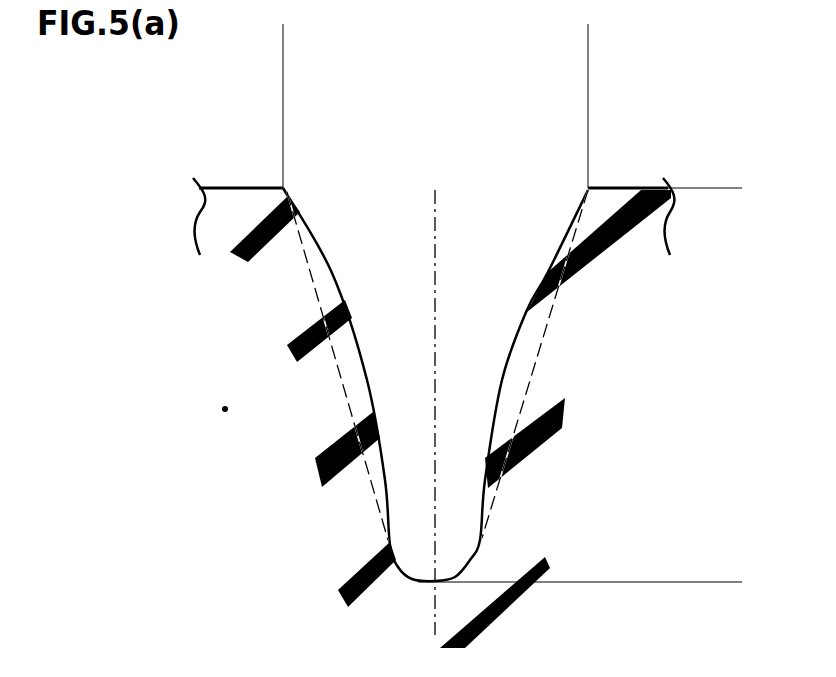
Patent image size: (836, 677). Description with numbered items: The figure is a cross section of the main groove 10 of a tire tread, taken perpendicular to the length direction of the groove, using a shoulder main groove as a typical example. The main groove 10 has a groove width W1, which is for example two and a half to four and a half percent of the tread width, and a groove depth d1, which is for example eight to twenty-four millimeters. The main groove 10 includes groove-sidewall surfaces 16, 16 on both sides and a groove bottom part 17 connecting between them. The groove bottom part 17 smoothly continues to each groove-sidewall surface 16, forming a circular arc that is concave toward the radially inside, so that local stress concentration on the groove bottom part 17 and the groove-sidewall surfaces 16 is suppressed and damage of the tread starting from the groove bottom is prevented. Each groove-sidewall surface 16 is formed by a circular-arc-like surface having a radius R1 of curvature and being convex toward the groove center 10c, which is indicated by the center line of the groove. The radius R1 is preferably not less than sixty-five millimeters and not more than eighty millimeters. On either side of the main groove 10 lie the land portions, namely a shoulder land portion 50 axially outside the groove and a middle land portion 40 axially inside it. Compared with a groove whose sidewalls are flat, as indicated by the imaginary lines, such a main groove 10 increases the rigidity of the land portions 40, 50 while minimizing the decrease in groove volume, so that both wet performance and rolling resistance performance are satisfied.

The main groove 10 is at (435, 312).
The groove-sidewall surface 16 is at (332, 273).
The groove bottom part 17 is at (448, 572).
The groove center 10c is at (433, 240).
The middle land portion 40 is at (641, 445).
The shoulder land portion 50 is at (259, 494).
The radius of curvature R1 is at (290, 383).
The groove width W1 is at (283, 24).
The groove depth d1 is at (735, 188).